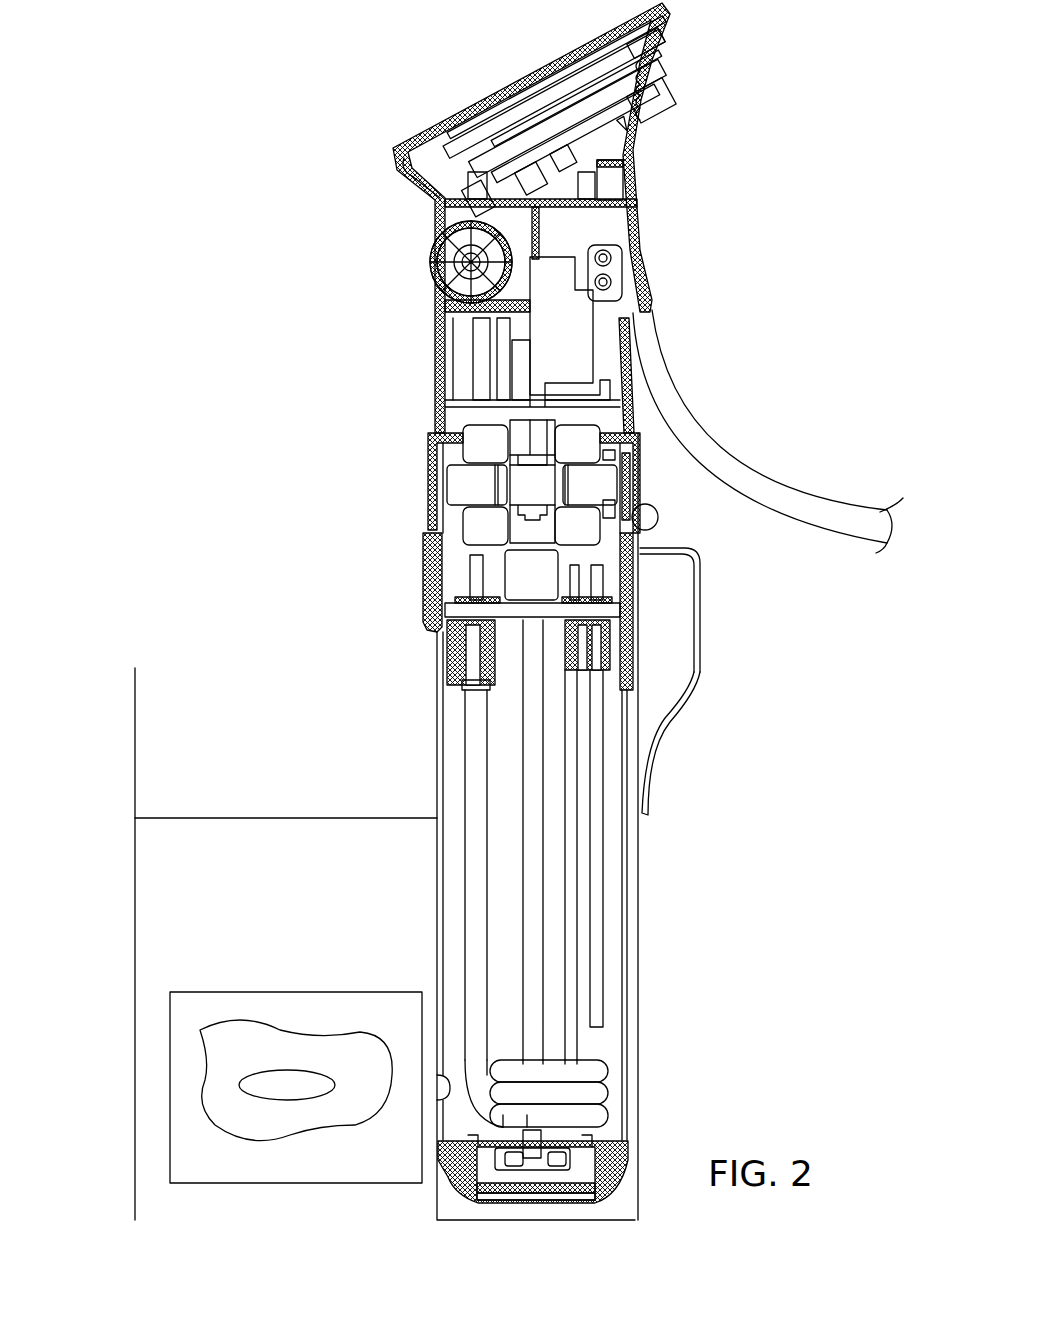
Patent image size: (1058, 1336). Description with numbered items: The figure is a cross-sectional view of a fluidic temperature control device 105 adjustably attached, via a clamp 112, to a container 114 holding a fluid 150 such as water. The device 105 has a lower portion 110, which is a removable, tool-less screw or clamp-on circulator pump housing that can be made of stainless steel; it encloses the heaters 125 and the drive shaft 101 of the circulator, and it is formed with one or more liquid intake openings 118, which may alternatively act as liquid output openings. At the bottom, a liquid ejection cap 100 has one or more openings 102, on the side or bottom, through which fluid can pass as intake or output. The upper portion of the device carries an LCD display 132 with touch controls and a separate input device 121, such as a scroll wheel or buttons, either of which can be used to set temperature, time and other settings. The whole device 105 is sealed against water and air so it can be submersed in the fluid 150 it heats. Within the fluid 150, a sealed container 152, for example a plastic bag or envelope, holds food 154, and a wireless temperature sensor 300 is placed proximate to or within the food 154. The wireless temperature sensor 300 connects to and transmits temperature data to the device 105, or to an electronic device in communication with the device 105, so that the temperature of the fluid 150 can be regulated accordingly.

The liquid ejection cap 100 is at (612, 1185).
The drive shaft 101 is at (530, 1155).
The openings 102 is at (540, 1195).
The fluidic temperature control device 105 is at (790, 24).
The lower portion 110 is at (628, 903).
The clamp 112 is at (718, 647).
The container 114 is at (640, 713).
The liquid intake openings 118 is at (440, 1085).
The input device 121 is at (432, 251).
The heaters 125 is at (595, 1113).
The LCD display 132 is at (560, 70).
The fluid 150 is at (165, 910).
The sealed container 152 is at (230, 1170).
The food 154 is at (352, 1133).
The wireless temperature sensor 300 is at (205, 1082).